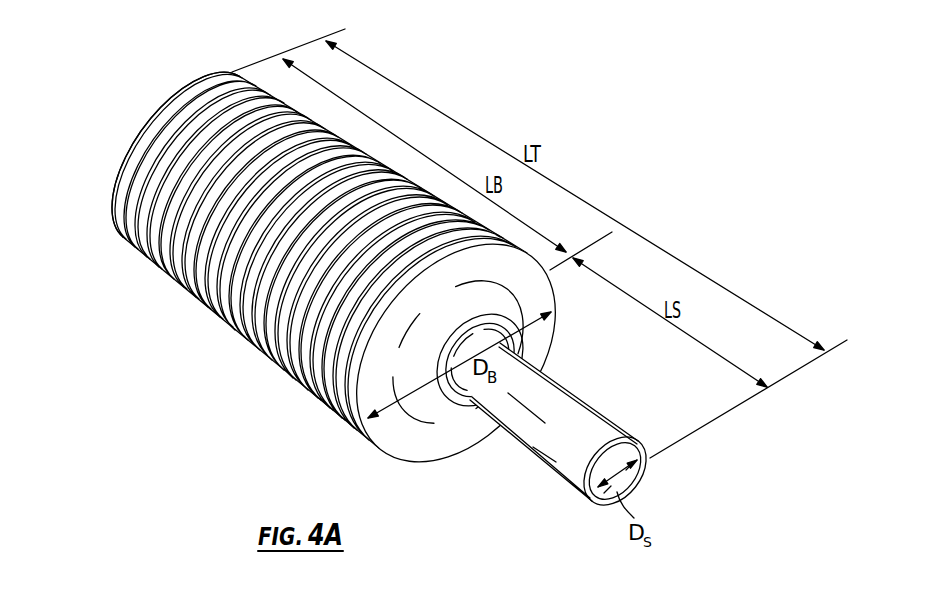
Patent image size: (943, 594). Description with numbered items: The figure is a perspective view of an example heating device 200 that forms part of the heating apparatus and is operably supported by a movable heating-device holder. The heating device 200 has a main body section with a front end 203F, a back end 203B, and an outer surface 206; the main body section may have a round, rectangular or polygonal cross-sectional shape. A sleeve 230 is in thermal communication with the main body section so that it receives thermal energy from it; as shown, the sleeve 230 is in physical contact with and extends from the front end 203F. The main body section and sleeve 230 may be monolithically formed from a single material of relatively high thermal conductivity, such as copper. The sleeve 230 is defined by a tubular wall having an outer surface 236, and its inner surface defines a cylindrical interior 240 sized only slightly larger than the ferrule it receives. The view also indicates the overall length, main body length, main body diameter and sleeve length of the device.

The heating device 200 is at (374, 302).
The back end 203B is at (128, 160).
The front end 203F is at (423, 438).
The outer surface 206 is at (218, 100).
The sleeve 230 is at (596, 463).
The outer surface 236 is at (566, 398).
The cylindrical interior 240 is at (638, 482).